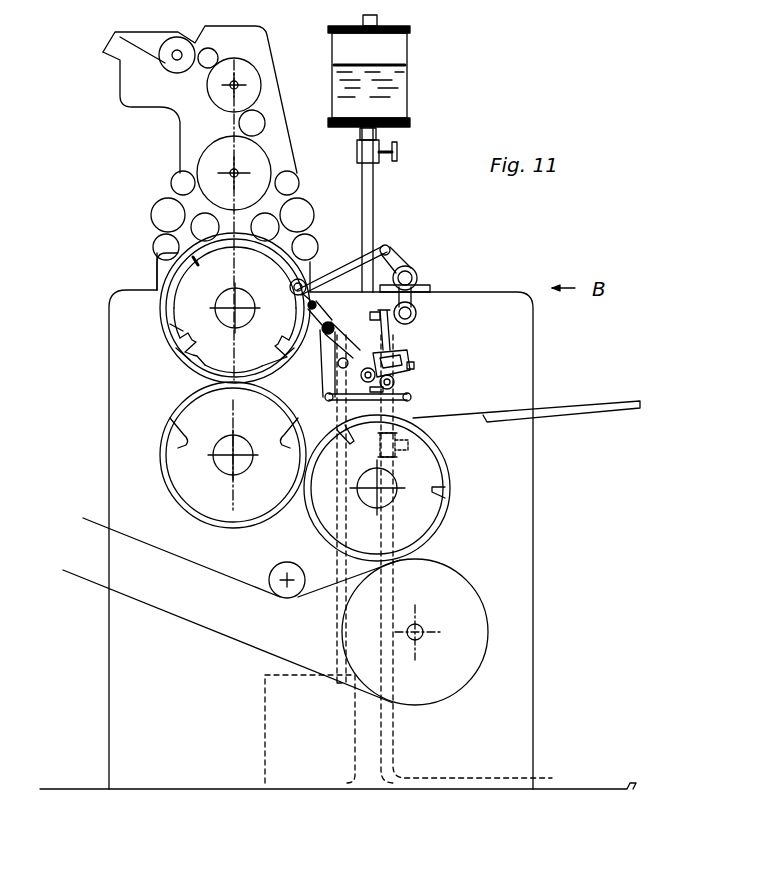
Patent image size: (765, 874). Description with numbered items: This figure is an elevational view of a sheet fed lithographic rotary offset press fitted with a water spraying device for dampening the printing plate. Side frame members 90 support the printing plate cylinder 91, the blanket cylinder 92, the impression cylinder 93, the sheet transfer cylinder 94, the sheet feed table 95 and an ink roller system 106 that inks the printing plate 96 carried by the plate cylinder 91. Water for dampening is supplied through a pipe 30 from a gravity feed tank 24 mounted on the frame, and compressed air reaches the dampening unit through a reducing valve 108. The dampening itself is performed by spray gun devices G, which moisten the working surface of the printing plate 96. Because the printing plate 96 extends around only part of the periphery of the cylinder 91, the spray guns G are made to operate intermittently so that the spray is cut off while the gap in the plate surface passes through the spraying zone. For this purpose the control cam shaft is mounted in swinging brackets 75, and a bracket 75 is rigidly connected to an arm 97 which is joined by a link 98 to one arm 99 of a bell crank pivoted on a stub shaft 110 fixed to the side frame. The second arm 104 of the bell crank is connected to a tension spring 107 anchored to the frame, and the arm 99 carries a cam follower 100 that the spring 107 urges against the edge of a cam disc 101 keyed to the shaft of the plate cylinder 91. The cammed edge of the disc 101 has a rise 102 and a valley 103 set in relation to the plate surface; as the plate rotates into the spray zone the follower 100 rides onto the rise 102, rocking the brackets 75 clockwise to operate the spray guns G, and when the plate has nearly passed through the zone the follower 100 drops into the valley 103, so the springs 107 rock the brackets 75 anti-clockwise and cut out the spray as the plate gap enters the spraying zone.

The gravity feed tank 24 is at (390, 82).
The pipe 30 is at (367, 182).
The swinging bracket 75 is at (416, 304).
The side frame member 90 is at (508, 688).
The printing plate cylinder 91 is at (187, 347).
The blanket cylinder 92 is at (193, 513).
The impression cylinder 93 is at (445, 517).
The sheet transfer cylinder 94 is at (467, 580).
The sheet feed table 95 is at (568, 412).
The printing plate 96 is at (158, 307).
The arm 97 is at (392, 253).
The link 98 is at (357, 265).
The arm of bell crank 99 is at (316, 305).
The cam follower 100 is at (308, 300).
The cam disc 101 is at (183, 307).
The cam rise 102 is at (195, 260).
The cam valley 103 is at (326, 357).
The second arm of bell crank 104 is at (315, 367).
The ink roller system 106 is at (168, 118).
The tension spring 107 is at (352, 400).
The reducing valve 108 is at (410, 448).
The stub shaft 110 is at (342, 328).
The spray gun device G is at (402, 352).